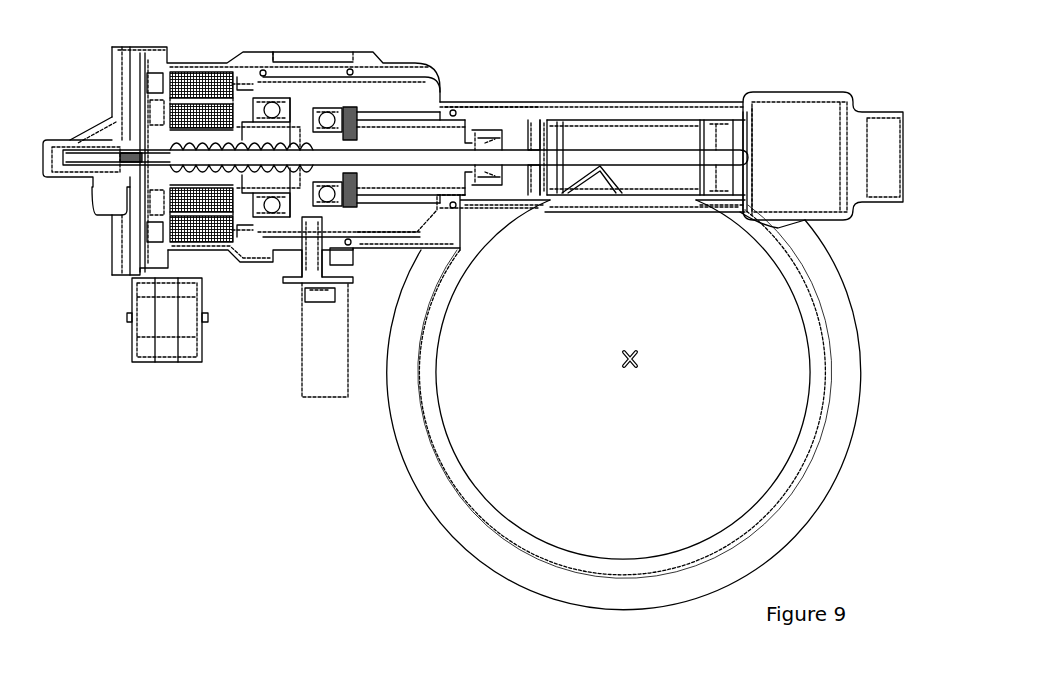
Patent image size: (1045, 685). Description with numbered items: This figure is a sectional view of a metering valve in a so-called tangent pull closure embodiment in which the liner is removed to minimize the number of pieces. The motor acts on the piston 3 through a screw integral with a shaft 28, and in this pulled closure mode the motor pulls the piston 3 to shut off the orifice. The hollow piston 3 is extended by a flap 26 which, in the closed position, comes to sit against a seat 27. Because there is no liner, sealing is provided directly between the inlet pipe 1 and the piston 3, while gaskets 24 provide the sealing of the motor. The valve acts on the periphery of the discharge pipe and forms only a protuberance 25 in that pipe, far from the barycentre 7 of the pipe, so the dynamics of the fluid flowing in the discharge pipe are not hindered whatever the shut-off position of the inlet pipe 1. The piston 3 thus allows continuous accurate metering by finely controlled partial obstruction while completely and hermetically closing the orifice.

The inlet pipe 1 is at (788, 138).
The piston 3 is at (587, 122).
The barycentre 7 is at (620, 366).
The gaskets 24 is at (537, 122).
The protuberance 25 is at (607, 203).
The flap 26 is at (737, 120).
The seat 27 is at (747, 117).
The shaft 28 is at (503, 150).